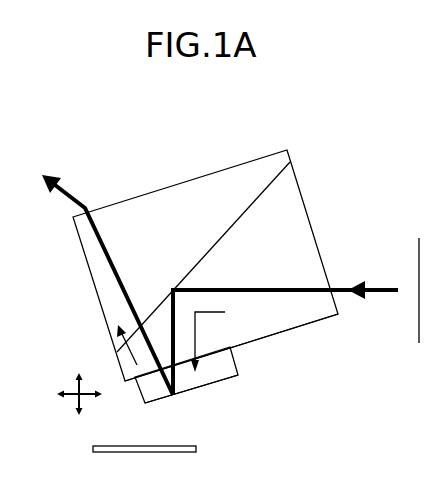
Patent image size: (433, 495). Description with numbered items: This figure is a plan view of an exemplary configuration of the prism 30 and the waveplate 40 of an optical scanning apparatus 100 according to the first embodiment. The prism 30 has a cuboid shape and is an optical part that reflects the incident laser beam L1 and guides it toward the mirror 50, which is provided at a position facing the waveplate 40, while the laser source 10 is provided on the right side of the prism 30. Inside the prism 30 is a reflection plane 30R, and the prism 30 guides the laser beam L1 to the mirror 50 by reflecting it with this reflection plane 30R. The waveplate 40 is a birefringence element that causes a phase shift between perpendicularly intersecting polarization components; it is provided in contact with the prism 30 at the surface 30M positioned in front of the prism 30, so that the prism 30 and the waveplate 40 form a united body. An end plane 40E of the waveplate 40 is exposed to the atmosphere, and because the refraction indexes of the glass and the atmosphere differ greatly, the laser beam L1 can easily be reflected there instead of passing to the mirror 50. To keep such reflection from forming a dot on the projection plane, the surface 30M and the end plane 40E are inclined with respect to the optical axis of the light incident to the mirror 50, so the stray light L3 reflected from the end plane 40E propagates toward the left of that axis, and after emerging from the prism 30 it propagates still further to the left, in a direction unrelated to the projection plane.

The optical device 100 is at (93, 118).
The laser source 10 is at (419, 238).
The prism 30 is at (305, 202).
The reflection plane 30R is at (258, 195).
The surface of the prism 30M is at (310, 323).
The waveplate 40 is at (228, 377).
The end plane 40E is at (190, 392).
The mirror 50 is at (93, 449).
The laser beam L1 is at (175, 327).
The stray light L3 is at (103, 238).